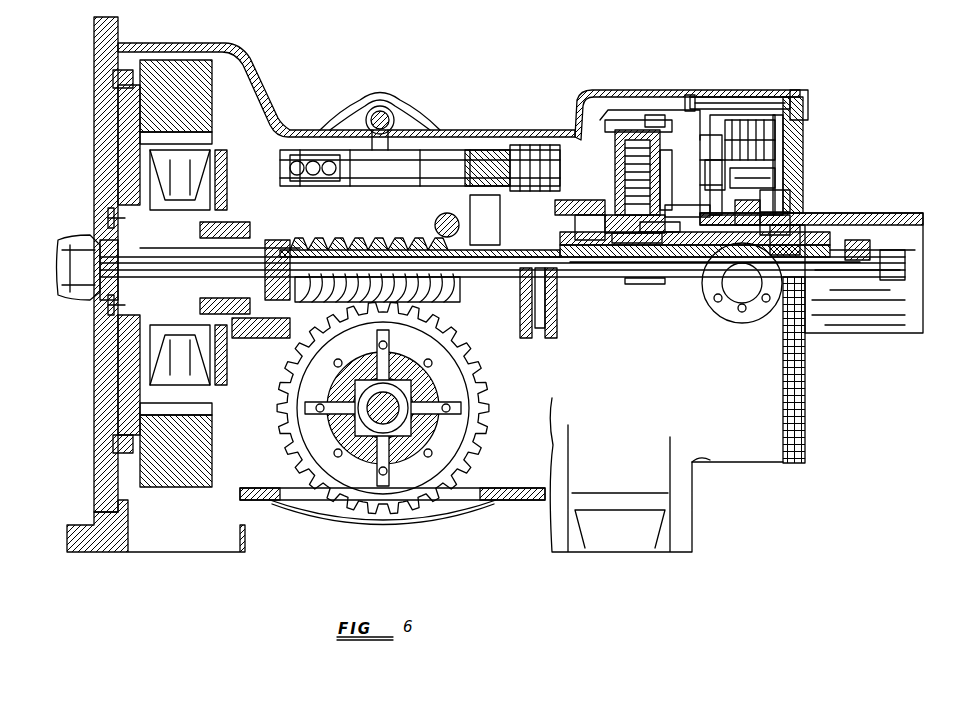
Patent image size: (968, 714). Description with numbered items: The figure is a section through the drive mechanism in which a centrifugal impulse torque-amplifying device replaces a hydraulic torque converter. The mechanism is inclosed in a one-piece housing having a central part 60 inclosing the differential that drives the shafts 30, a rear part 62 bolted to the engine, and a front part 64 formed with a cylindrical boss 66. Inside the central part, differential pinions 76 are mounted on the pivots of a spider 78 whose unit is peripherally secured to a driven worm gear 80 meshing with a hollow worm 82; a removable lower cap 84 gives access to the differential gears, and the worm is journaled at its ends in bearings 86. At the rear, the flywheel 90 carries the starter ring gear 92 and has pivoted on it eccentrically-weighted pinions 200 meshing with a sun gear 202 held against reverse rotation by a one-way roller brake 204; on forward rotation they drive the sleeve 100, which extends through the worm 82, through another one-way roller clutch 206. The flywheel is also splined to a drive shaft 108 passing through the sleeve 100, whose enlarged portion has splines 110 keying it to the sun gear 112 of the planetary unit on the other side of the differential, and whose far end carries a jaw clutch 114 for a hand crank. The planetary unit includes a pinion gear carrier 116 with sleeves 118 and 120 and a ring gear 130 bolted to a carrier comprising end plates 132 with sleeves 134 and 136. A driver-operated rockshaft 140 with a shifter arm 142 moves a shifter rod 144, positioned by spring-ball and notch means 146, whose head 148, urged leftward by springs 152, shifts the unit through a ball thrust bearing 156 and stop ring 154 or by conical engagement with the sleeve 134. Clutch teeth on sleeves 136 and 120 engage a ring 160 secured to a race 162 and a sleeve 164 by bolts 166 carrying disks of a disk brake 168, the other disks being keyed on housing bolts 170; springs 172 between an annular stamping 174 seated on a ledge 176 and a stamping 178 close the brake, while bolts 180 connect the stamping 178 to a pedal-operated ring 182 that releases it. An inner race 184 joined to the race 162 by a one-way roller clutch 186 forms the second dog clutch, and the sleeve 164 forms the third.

The shafts 30 is at (400, 400).
The central part 60 is at (545, 492).
The rear part 62 is at (155, 545).
The front part 64 is at (767, 373).
The cylindrical boss 66 is at (872, 315).
The differential pinions 76 is at (425, 368).
The spider 78 is at (448, 404).
The driven worm gear 80 is at (400, 500).
The hollow worm 82 is at (322, 246).
The removable lower cap 84 is at (310, 512).
The bearings 86 is at (450, 222).
The flywheel 90 is at (125, 108).
The starter ring gear 92 is at (96, 58).
The driven sleeve 100 is at (318, 240).
The drive shaft 108 is at (100, 320).
The splines 110 is at (632, 276).
The sun gear 112 is at (628, 284).
The jaw clutch 114 is at (868, 270).
The pinion gear carrier 116 is at (648, 175).
The sleeve 118 is at (648, 205).
The sleeve 120 is at (690, 275).
The ring gear 130 is at (625, 135).
The end plates 132 is at (583, 125).
The sleeve 134 is at (580, 282).
The sleeve 136 is at (690, 222).
The transverse rockshaft 140 is at (368, 122).
The shifter arm 142 is at (366, 146).
The shifter rod 144 is at (478, 150).
The spring-ball and notch positioning means 146 is at (348, 160).
The head 148 is at (650, 160).
The springs 152 is at (560, 302).
The stop ring 154 is at (565, 335).
The ball thrust bearing 156 is at (600, 205).
The ring 160 is at (705, 205).
The race 162 is at (800, 192).
The sleeve 164 is at (855, 225).
The bolts 166 is at (800, 176).
The disk brake 168 is at (800, 162).
The bolts 170 is at (740, 70).
The springs 172 is at (805, 120).
The annular channel-section stamping 174 is at (762, 90).
The ledge 176 is at (775, 95).
The stamping 178 is at (800, 146).
The bolts 180 is at (800, 132).
The ring 182 is at (728, 95).
The inner race 184 is at (805, 215).
The one-way roller clutch 186 is at (845, 200).
The eccentrically-weighted pinions 200 is at (195, 110).
The sun gear 202 is at (205, 210).
The one-way roller brake 204 is at (230, 215).
The one-way roller clutch 206 is at (98, 228).